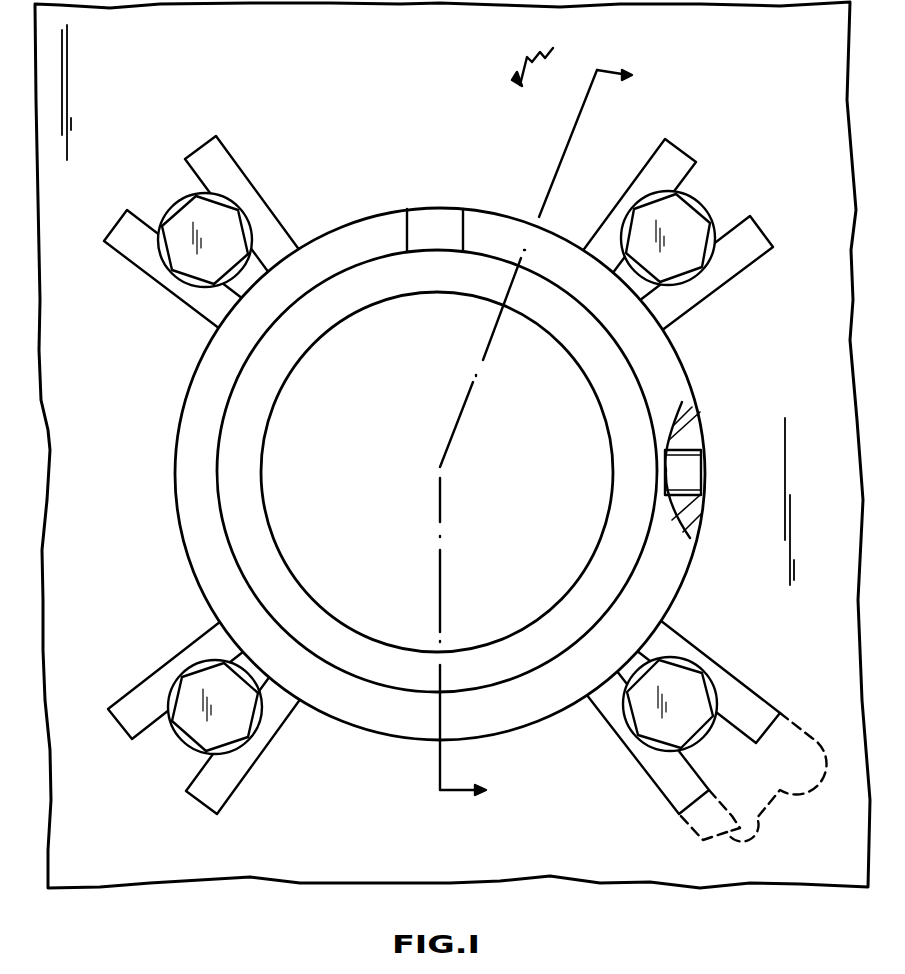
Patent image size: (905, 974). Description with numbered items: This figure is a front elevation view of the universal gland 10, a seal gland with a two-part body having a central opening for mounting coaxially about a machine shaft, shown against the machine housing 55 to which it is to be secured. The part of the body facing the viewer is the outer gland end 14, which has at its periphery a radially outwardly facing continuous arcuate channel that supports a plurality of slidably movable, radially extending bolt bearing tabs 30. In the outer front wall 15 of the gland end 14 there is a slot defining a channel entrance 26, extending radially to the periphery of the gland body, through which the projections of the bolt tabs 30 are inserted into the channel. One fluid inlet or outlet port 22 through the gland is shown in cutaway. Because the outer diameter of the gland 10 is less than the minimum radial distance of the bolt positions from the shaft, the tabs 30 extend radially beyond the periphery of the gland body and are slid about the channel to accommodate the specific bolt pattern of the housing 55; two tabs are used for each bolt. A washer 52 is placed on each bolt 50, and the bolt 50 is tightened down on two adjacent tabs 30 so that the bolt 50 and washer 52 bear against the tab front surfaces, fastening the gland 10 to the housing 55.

The universal gland 10 is at (545, 414).
The outer gland end 14 is at (176, 508).
The outer front wall 15 is at (252, 440).
The port 22 is at (702, 468).
The channel entrance 26 is at (421, 212).
The bolt bearing tabs 30 is at (232, 160).
The bolt 50 is at (200, 212).
The washer 52 is at (175, 205).
The machine housing 55 is at (228, 65).